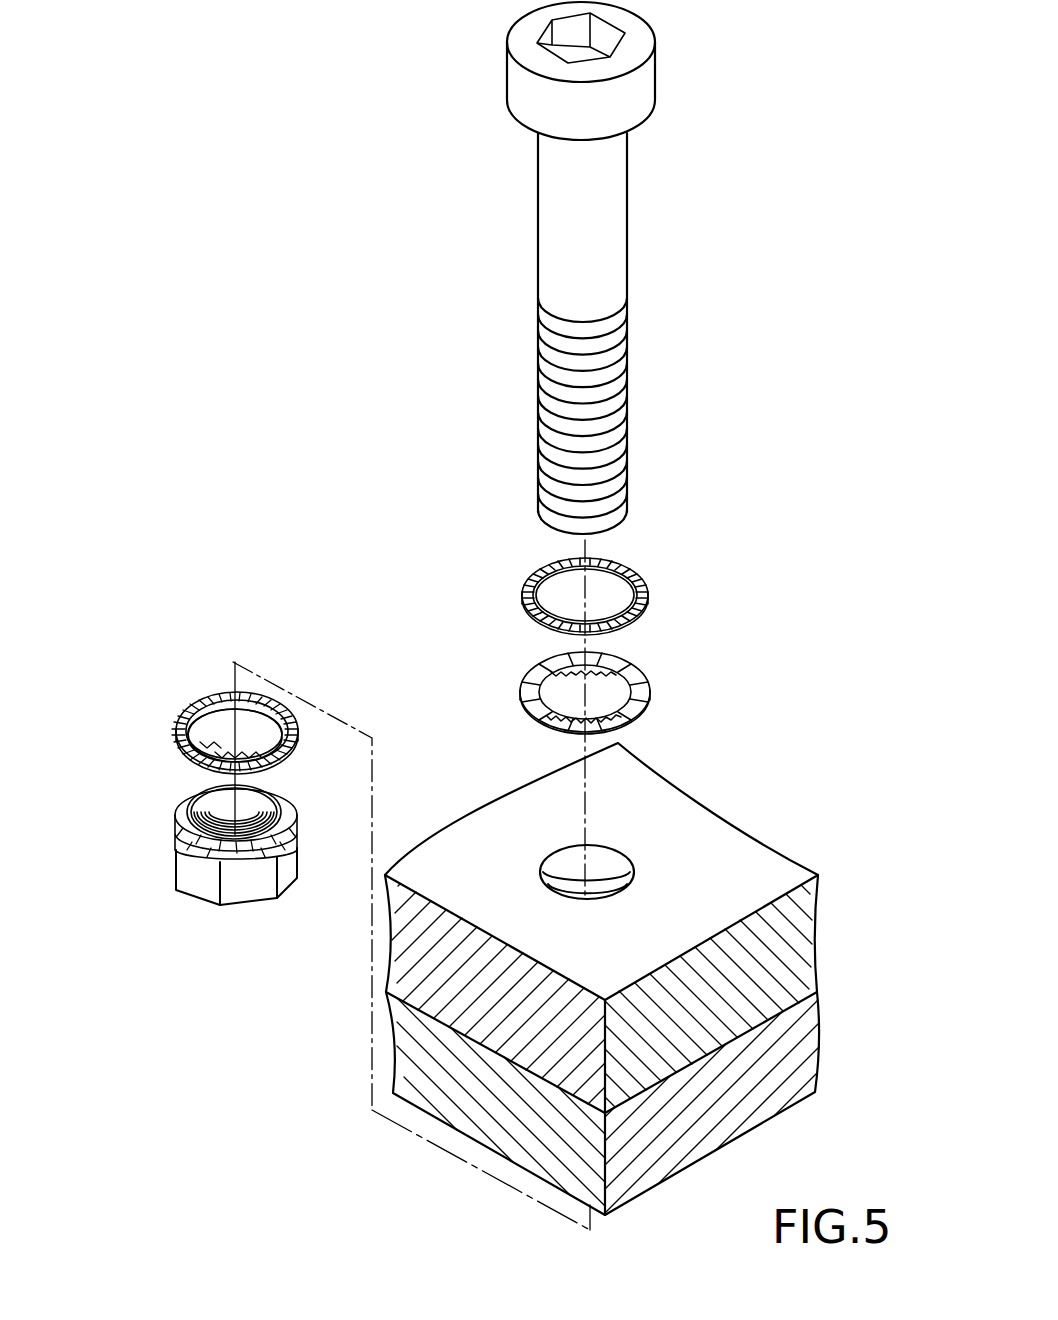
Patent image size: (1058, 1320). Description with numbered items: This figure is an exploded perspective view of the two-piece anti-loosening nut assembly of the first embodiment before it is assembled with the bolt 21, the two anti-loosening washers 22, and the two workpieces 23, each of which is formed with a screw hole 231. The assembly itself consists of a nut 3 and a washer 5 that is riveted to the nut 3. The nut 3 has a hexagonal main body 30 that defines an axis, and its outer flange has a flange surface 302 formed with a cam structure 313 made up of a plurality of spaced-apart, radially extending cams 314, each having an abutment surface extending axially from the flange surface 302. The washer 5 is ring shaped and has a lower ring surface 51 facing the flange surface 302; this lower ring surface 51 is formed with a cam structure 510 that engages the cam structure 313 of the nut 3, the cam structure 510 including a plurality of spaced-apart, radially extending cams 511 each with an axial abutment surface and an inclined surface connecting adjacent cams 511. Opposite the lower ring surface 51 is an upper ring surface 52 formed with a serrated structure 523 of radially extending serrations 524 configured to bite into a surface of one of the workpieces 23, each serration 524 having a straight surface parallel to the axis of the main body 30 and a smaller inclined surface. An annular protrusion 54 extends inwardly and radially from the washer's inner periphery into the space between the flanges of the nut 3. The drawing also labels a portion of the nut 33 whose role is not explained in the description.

The bolt 21 is at (605, 243).
The anti-loosening washers 22 is at (632, 663).
The workpieces 23 is at (787, 1030).
The screw hole 231 is at (613, 850).
The nut 3 is at (232, 922).
The main body 30 is at (257, 888).
The flange surface 302 is at (168, 819).
The cam structure 313 is at (236, 824).
The cams 314 is at (230, 855).
The threaded bore collar 33 is at (277, 846).
The washer 5 is at (196, 700).
The upper ring surface 52 is at (253, 692).
The serrated structure 523 is at (237, 733).
The serrations 524 is at (300, 656).
The annular protrusion 54 is at (305, 738).
The lower ring surface 51 is at (300, 741).
The cam structure 510 is at (235, 735).
The cams 511 is at (314, 783).